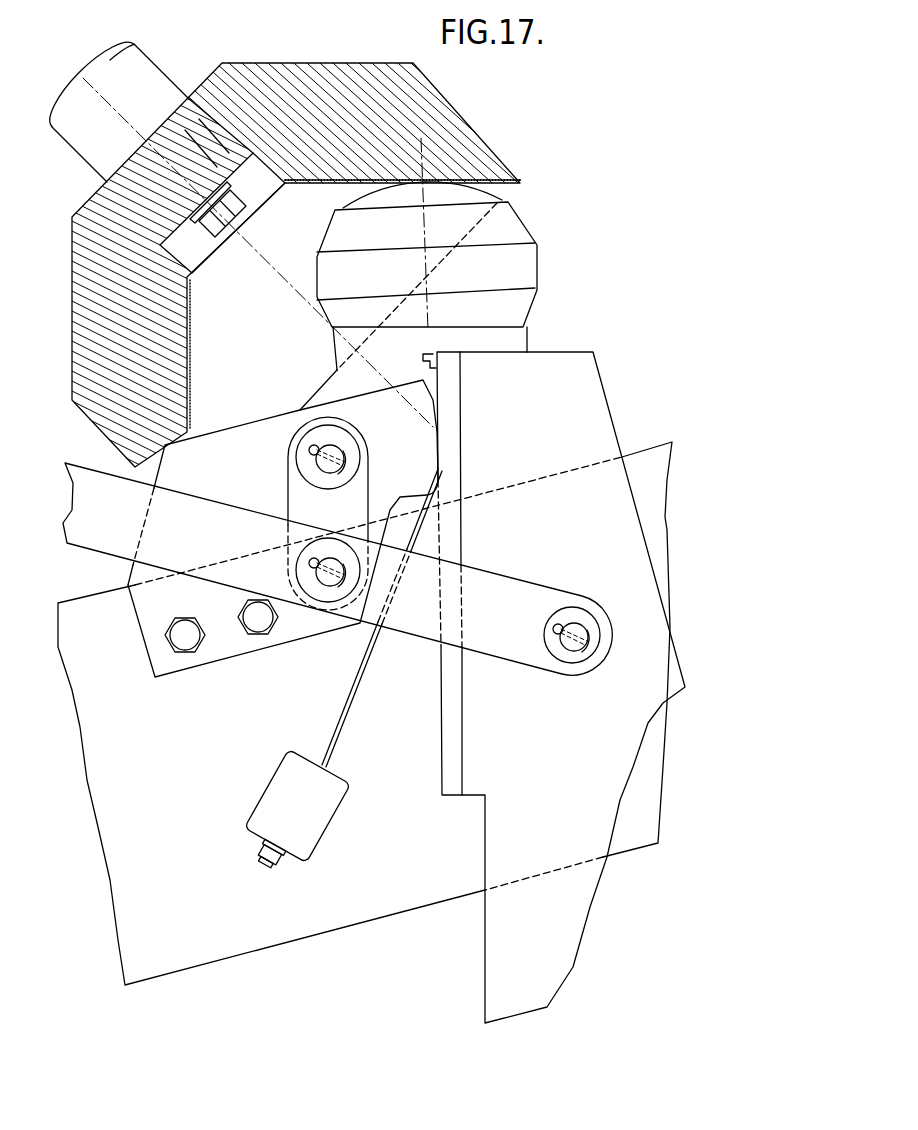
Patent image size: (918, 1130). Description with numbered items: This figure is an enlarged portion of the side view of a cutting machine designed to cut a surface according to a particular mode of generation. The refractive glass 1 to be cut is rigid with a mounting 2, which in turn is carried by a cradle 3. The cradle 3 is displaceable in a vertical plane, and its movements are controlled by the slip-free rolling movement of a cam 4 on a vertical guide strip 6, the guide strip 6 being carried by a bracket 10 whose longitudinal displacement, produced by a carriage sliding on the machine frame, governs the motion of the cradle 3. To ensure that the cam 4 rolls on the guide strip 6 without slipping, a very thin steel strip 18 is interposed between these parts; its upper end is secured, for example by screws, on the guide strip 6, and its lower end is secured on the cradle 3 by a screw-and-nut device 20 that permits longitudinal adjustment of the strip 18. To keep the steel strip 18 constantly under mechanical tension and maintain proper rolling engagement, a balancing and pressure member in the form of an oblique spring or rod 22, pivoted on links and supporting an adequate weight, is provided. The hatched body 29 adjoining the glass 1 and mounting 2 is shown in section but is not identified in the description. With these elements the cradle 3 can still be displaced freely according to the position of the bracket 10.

The refractive glass 1 is at (367, 199).
The mounting 2 is at (427, 254).
The cradle 3 is at (365, 713).
The cam 4 is at (428, 403).
The vertical guide strip 6 is at (457, 419).
The bracket 10 is at (561, 687).
The thin steel strip 18 is at (350, 696).
The screw-and-nut device 20 is at (292, 815).
The oblique spring or rod 22 is at (511, 655).
The hatched housing block 29 is at (447, 124).